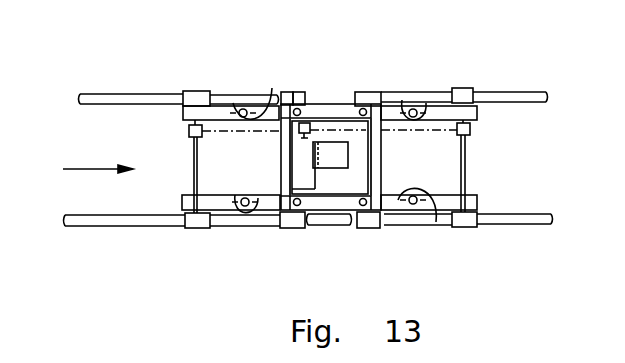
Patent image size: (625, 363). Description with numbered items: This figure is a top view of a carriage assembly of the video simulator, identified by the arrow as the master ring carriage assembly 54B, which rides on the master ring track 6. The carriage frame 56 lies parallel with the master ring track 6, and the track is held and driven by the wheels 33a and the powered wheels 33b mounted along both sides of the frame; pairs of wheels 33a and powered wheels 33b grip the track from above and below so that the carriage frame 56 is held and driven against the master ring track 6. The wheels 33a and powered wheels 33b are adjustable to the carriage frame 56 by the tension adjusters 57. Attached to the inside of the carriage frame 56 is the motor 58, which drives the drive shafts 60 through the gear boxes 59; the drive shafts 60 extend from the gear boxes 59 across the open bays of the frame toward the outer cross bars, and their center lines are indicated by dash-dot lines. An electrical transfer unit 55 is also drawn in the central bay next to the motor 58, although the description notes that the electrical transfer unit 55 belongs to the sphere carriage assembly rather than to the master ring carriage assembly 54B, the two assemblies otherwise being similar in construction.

The master ring track 6 is at (133, 93).
The wheels 33a is at (268, 92).
The powered wheels 33b is at (216, 64).
The master ring carriage assembly 54B is at (78, 183).
The electrical transfer unit 55 is at (342, 157).
The carriage frame 56 is at (183, 112).
The tension adjusters 57 is at (294, 92).
The motor 58 is at (307, 181).
The gear boxes 59 is at (189, 132).
The drive shafts 60 is at (197, 153).